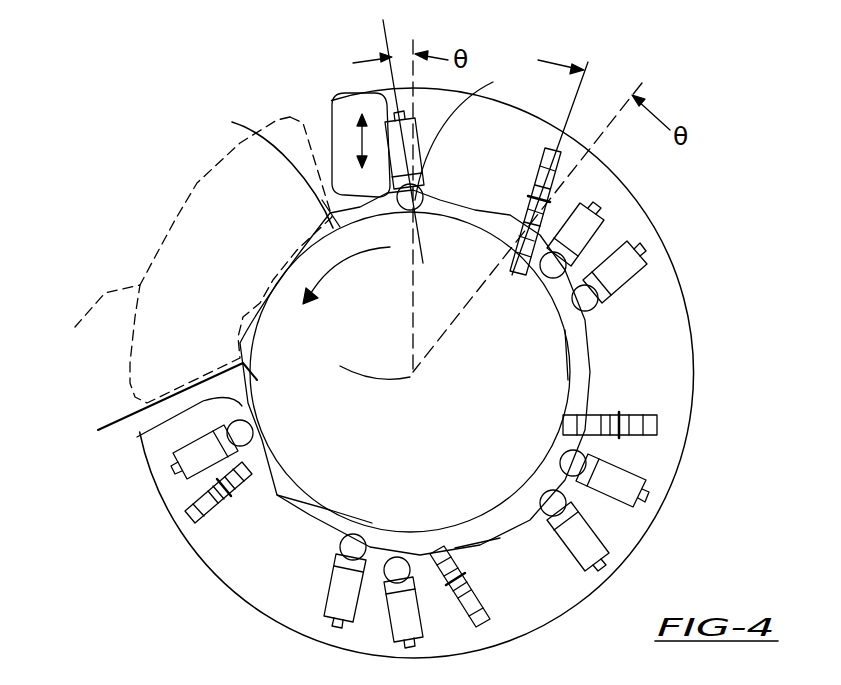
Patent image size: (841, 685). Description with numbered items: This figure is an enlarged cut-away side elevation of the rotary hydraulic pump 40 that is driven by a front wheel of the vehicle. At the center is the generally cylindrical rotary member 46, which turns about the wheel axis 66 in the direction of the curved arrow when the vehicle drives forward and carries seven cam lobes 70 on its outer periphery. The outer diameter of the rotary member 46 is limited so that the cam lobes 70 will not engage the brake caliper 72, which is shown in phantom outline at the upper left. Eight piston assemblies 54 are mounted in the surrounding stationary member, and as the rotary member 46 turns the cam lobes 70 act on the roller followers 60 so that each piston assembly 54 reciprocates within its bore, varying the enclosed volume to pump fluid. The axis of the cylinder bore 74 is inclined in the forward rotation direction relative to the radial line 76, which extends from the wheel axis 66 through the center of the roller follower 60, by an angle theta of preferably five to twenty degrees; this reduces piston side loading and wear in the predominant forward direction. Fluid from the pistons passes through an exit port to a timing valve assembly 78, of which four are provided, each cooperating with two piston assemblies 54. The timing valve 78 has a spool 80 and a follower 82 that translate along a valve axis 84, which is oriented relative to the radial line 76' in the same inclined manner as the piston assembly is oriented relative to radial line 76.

The rotary hydraulic pump 40 is at (156, 527).
The rotary member 46 is at (264, 168).
The piston assembly 54 is at (387, 128).
The roller follower 60 is at (469, 134).
The wheel axis 66 is at (368, 358).
The cam lobe 70 is at (159, 404).
The brake caliper 72 is at (196, 260).
The cylinder bore axis 74 is at (387, 136).
The radial line 76 is at (424, 189).
The radial line 76' is at (552, 205).
The timing valve assembly 78 is at (532, 195).
The spool 80 is at (513, 212).
The follower 82 is at (522, 255).
The valve axis 84 is at (595, 90).